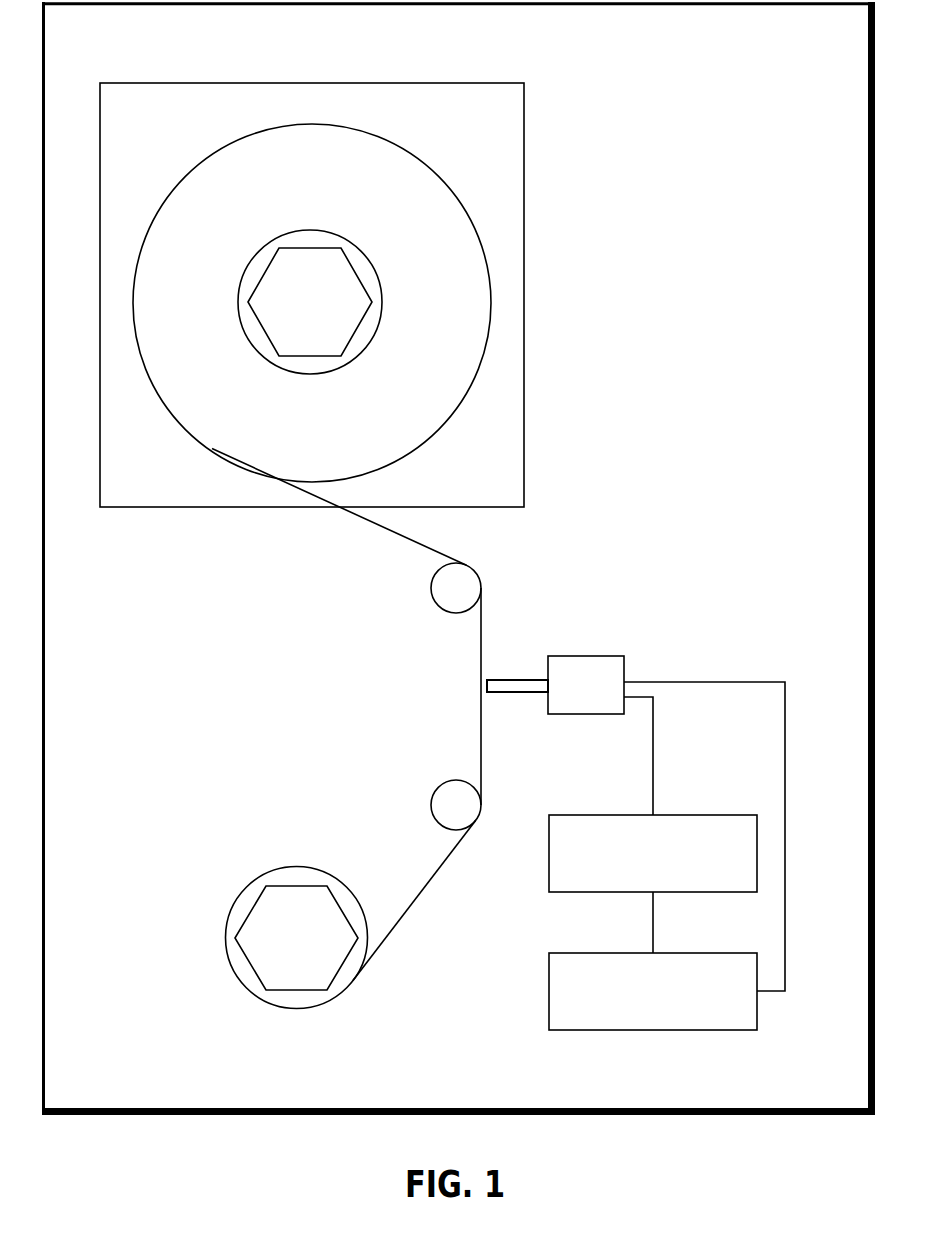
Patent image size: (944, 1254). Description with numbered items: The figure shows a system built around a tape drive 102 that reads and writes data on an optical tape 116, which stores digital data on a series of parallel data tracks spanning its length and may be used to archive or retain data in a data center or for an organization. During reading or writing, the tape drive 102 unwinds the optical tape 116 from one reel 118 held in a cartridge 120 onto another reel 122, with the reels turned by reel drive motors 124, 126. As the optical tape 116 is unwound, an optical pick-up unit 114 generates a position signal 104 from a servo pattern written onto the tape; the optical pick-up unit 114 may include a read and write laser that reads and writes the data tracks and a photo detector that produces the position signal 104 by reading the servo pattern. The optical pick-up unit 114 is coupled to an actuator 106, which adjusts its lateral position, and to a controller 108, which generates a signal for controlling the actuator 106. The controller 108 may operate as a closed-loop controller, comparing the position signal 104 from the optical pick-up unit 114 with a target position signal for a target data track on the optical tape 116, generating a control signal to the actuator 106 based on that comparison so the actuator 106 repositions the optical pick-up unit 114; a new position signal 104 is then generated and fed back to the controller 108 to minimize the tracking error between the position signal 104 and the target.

The tape drive 102 is at (436, 38).
The position signal 104 is at (704, 824).
The actuator 106 is at (632, 854).
The controller 108 is at (632, 988).
The optical pick-up unit 114 is at (563, 698).
The optical tape 116 is at (387, 530).
The reel 118 is at (213, 410).
The cartridge 120 is at (546, 84).
The reel 122 is at (306, 1008).
The reel drive motor 124 is at (287, 314).
The reel drive motor 126 is at (276, 952).